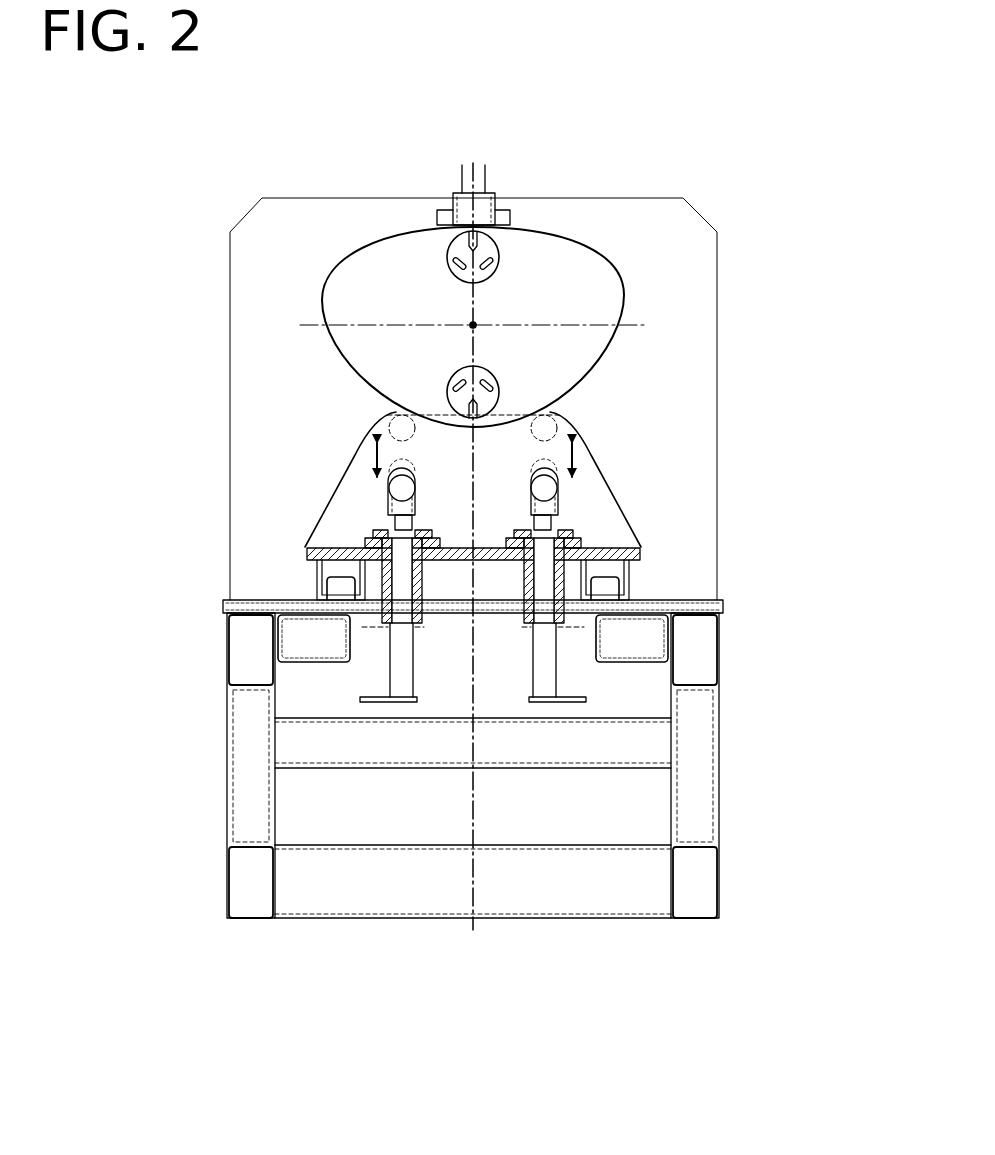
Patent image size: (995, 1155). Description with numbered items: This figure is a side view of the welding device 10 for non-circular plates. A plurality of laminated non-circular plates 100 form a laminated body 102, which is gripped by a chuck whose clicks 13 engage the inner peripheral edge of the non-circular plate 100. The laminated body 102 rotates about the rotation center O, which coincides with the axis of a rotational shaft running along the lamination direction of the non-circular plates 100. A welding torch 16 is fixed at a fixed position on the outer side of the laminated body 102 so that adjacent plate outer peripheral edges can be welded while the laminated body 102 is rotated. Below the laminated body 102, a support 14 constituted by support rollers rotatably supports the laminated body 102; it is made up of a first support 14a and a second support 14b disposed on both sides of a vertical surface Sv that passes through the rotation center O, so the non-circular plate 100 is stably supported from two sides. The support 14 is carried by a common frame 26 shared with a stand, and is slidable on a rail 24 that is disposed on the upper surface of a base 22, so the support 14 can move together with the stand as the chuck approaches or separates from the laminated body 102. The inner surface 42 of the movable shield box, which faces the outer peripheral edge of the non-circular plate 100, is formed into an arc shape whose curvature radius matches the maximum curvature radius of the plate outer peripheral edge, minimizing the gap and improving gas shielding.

The welding device 10 is at (490, 103).
The welding torch 16 is at (462, 177).
The non-circular plate 100 is at (610, 308).
The laminated body 102 is at (606, 251).
The rotation center O is at (477, 322).
The clicks 13 is at (449, 252).
The support 14 is at (484, 570).
The first support 14a is at (560, 507).
The second support 14b is at (387, 508).
The inner surface 42 is at (388, 523).
The common frame 26 is at (306, 553).
The rail 24 is at (335, 588).
The base 22 is at (243, 653).
The vertical surface Sv is at (473, 790).